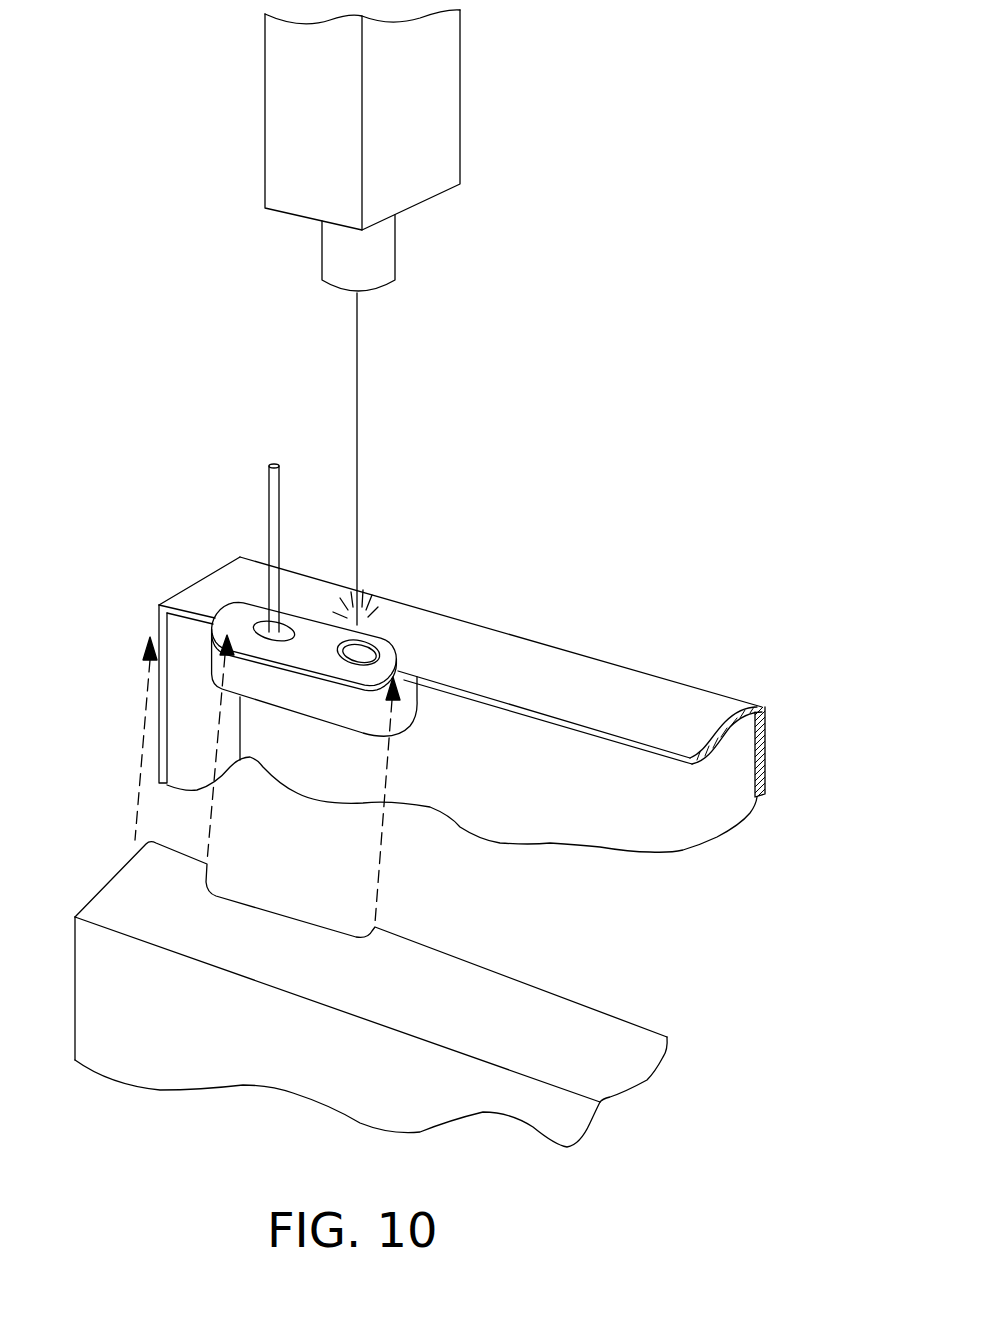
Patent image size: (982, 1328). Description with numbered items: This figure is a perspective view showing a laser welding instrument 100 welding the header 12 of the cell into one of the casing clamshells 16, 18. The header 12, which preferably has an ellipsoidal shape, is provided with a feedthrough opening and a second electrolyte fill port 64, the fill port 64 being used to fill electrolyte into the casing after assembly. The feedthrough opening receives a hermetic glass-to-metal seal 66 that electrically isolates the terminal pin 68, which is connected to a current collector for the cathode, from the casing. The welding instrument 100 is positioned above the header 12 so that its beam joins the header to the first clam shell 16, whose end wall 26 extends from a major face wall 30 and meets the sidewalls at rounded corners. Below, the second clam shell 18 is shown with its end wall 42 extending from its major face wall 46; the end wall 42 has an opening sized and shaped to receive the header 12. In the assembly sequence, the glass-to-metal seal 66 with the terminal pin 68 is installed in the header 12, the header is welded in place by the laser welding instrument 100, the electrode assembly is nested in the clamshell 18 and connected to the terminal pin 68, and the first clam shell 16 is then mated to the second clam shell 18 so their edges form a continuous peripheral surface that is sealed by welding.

The laser welding instrument 100 is at (450, 98).
The terminal pin 68 is at (268, 477).
The glass-to-metal seal 66 is at (262, 622).
The header 12 is at (279, 650).
The electrolyte fill port 64 is at (370, 647).
The end wall 26 is at (530, 660).
The first clam shell 16 is at (482, 708).
The major face wall 30 is at (723, 785).
The end wall 42 is at (478, 1005).
The second clam shell 18 is at (407, 994).
The major face wall 46 is at (137, 1055).